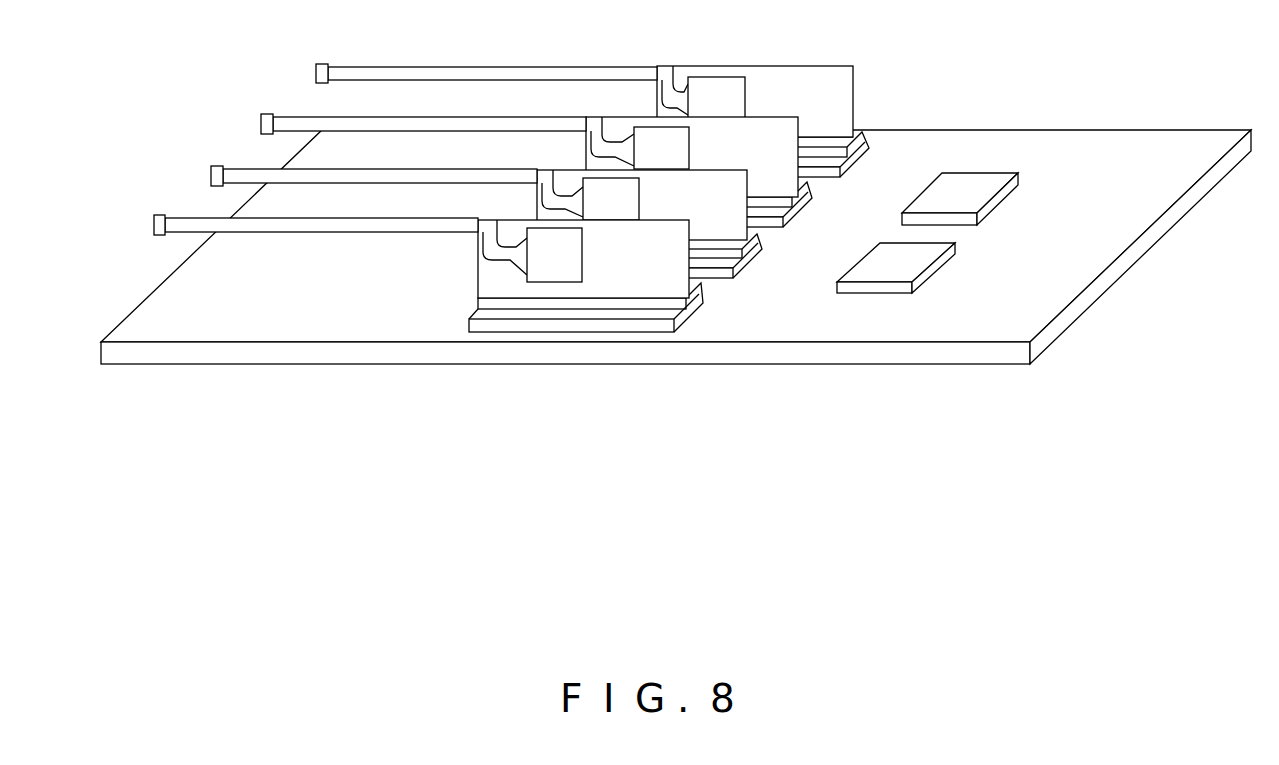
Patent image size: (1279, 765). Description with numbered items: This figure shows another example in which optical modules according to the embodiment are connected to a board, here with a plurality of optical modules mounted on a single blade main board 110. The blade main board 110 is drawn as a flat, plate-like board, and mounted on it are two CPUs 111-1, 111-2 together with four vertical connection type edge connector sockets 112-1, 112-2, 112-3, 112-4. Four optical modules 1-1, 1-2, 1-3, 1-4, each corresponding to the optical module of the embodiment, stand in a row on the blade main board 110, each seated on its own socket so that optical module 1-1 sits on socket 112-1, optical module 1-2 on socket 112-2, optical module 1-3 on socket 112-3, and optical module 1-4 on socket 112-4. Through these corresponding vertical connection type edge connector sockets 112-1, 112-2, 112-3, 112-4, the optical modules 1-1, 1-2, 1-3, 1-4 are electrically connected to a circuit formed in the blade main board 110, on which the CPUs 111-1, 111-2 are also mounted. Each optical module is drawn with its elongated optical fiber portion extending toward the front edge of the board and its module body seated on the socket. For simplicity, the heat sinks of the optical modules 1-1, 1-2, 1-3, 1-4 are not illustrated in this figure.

The blade main board 110 is at (1163, 130).
The optical module 1-1 is at (477, 283).
The optical module 1-2 is at (537, 203).
The optical module 1-3 is at (586, 150).
The optical module 1-4 is at (792, 66).
The vertical connection type edge connector socket 112-1 is at (696, 308).
The vertical connection type edge connector socket 112-2 is at (762, 252).
The vertical connection type edge connector socket 112-3 is at (812, 196).
The vertical connection type edge connector socket 112-4 is at (866, 152).
The CPU 111-1 is at (1007, 197).
The CPU 111-2 is at (937, 265).